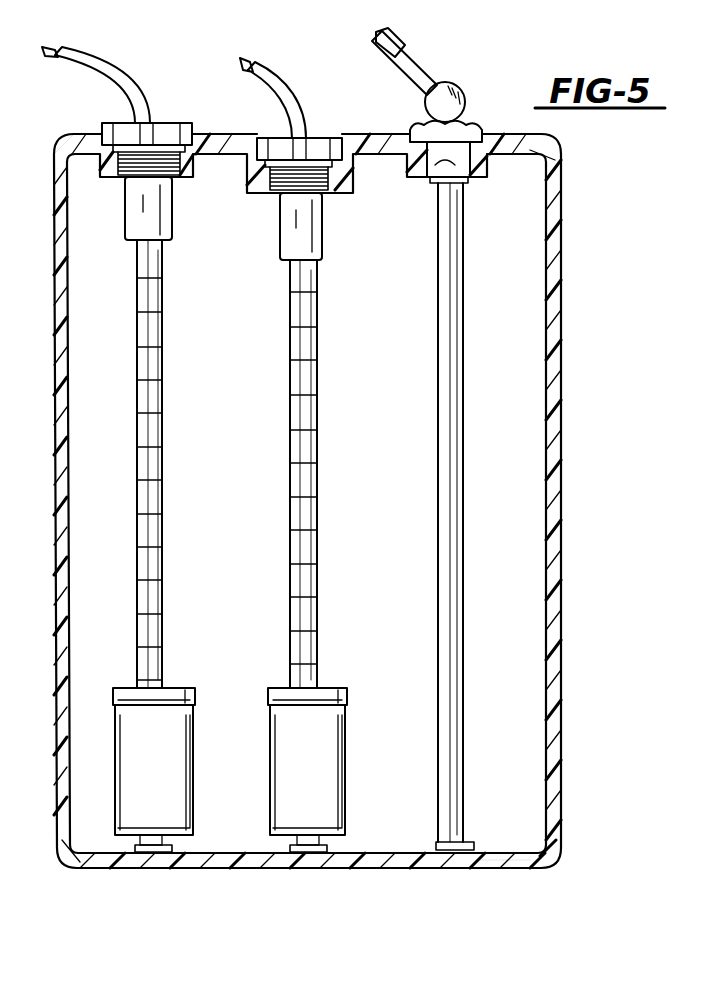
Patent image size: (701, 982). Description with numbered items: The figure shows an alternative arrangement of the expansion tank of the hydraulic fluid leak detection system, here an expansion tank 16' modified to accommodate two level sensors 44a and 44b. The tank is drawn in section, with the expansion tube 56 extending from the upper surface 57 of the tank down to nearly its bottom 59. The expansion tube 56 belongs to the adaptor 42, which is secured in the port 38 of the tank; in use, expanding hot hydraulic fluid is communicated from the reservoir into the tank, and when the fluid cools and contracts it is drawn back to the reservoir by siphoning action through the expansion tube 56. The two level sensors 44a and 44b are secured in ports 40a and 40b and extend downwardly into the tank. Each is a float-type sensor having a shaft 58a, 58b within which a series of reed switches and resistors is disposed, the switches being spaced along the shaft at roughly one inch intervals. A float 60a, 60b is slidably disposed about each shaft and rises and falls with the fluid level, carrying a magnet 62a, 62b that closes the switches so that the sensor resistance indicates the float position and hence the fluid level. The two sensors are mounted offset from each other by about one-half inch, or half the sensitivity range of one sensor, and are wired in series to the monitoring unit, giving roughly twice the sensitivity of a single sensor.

The expansion tank 16' is at (350, 501).
The top wall of canister 57 is at (63, 140).
The bottom of expansion tank 59 is at (490, 860).
The level sensor 44a is at (177, 130).
The level sensor 44b is at (327, 148).
The port 40a is at (130, 178).
The port 40b is at (293, 197).
The shaft 58a is at (157, 463).
The shaft 58b is at (307, 413).
The adaptor 42 is at (457, 97).
The port 38 is at (460, 180).
The expansion tube 56 is at (463, 290).
The float 60a is at (193, 737).
The float 60b is at (345, 787).
The magnet 62a is at (195, 693).
The magnet 62b is at (347, 698).